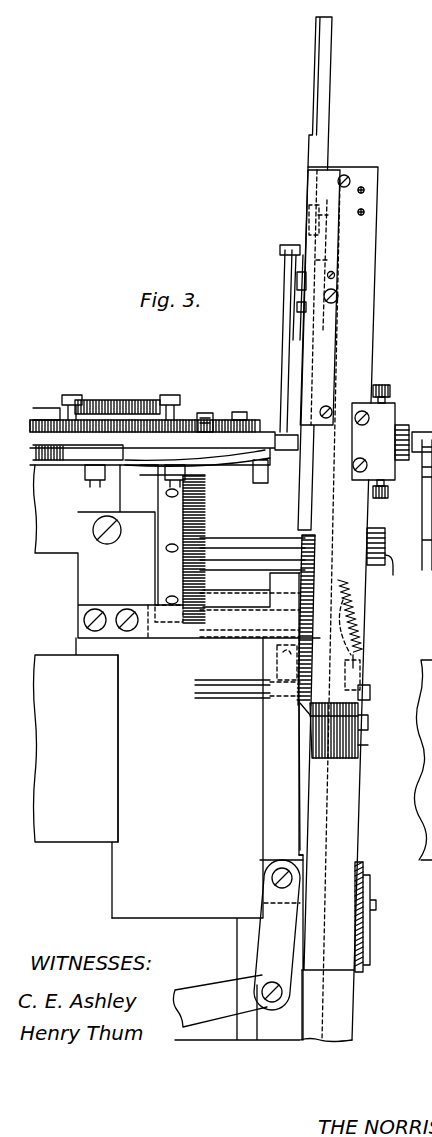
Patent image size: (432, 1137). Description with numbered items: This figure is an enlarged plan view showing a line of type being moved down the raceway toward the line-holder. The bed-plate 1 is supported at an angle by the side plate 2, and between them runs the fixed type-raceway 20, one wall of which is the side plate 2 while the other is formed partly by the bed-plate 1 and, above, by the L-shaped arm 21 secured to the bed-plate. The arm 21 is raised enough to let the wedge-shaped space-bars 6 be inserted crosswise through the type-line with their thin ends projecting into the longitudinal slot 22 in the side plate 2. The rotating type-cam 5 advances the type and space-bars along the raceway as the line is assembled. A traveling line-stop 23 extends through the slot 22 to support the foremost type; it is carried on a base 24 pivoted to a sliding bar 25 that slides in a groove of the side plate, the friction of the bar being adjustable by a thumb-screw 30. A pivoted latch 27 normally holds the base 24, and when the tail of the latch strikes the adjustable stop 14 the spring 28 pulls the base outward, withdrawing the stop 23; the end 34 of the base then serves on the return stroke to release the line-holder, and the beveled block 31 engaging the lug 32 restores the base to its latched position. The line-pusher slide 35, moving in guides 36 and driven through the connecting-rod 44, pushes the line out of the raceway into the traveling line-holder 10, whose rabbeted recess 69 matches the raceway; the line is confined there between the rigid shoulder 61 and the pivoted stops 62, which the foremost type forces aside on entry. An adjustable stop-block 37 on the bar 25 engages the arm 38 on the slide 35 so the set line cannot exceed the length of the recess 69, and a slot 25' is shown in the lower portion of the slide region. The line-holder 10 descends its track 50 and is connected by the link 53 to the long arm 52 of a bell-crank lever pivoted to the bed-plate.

The bed-plate 1 is at (175, 656).
The side plate 2 is at (372, 237).
The rotating type-cam 5 is at (340, 440).
The wedge-shaped space-bars 6 is at (224, 540).
The traveling line-holder 10 is at (272, 786).
The adjustable stop 14 is at (368, 925).
The type-raceway 20 is at (312, 537).
The L-shaped arm 21 is at (170, 640).
The longitudinal slot 22 is at (369, 728).
The traveling line-stop 23 is at (303, 718).
The base 24 is at (362, 665).
The sliding bar 25 is at (281, 220).
The slot 25' is at (284, 775).
The pivoted latch 27 is at (368, 745).
The spring 28 is at (356, 640).
The thumb-screw 30 is at (336, 277).
The beveled block 31 is at (385, 565).
The downwardly-projecting lug 32 is at (370, 695).
The end of the stop-carrying base 34 is at (342, 628).
The line-pusher slide 35 is at (308, 197).
The guides 36 is at (323, 62).
The adjustable stop-block 37 is at (298, 278).
The arm 38 is at (298, 307).
The second connecting-rod 44 is at (288, 358).
The track 50 is at (282, 1022).
The long arm of the bell-crank lever 52 is at (197, 1000).
The link 53 is at (275, 941).
The rigid shoulder 61 is at (302, 857).
The pivoted stops 62 is at (277, 668).
The rabbeted recess 69 is at (298, 826).